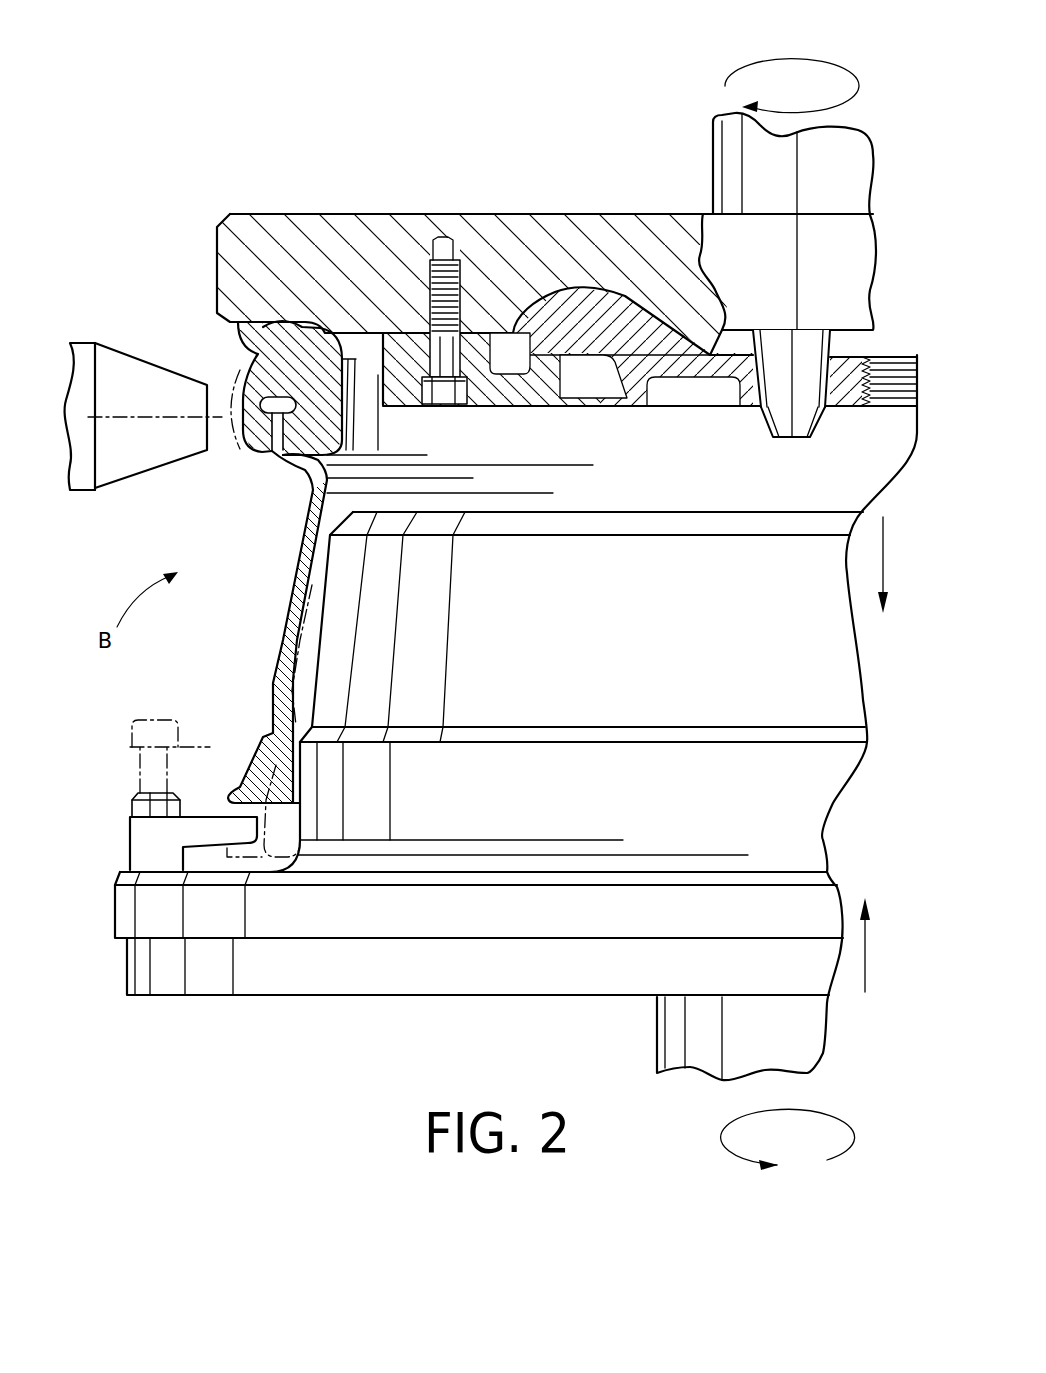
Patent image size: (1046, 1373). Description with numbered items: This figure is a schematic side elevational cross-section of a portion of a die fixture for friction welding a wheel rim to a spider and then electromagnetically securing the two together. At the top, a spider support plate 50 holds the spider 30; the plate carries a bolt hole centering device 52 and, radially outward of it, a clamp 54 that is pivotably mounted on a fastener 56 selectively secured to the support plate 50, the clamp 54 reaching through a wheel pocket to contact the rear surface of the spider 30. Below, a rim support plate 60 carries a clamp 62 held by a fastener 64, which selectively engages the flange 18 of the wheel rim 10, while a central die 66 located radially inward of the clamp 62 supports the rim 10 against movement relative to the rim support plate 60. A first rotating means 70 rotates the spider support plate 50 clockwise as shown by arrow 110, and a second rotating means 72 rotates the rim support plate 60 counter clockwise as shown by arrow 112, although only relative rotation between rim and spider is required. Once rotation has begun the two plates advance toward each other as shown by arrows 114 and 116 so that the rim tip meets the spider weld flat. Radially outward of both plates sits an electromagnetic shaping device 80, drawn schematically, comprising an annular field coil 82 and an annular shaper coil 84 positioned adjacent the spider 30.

The wheel rim 10 is at (298, 607).
The flange 18 is at (243, 797).
The spider 30 is at (677, 396).
The spider support plate 50 is at (473, 213).
The bolt hole centering device 52 is at (790, 426).
The clamp 54 is at (490, 392).
The fastener 56 is at (450, 393).
The rim support plate 60 is at (380, 998).
The clamp 62 is at (207, 828).
The fastener 64 is at (143, 806).
The central die 66 is at (808, 673).
The first rotating means 70 is at (725, 176).
The second rotating means 72 is at (673, 1030).
The electromagnetic shaping device 80 is at (143, 406).
The annular field coil 82 is at (81, 482).
The annular shaper coil 84 is at (133, 463).
The arrow 110 is at (770, 60).
The arrow 112 is at (827, 1160).
The arrow 114 is at (883, 560).
The arrow 116 is at (865, 955).